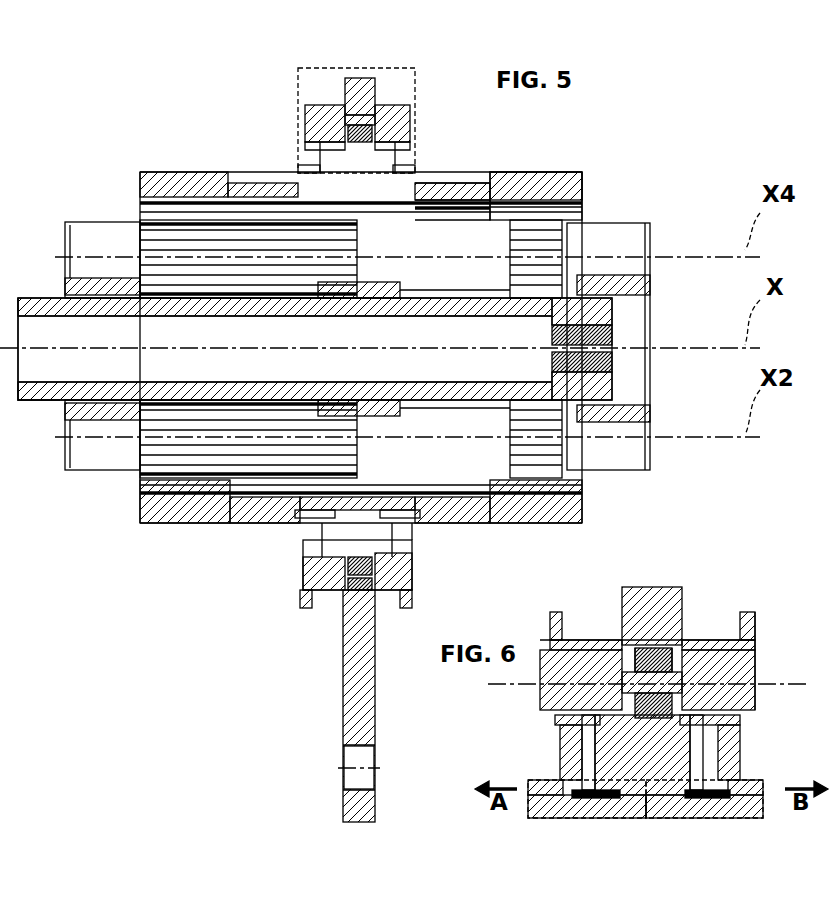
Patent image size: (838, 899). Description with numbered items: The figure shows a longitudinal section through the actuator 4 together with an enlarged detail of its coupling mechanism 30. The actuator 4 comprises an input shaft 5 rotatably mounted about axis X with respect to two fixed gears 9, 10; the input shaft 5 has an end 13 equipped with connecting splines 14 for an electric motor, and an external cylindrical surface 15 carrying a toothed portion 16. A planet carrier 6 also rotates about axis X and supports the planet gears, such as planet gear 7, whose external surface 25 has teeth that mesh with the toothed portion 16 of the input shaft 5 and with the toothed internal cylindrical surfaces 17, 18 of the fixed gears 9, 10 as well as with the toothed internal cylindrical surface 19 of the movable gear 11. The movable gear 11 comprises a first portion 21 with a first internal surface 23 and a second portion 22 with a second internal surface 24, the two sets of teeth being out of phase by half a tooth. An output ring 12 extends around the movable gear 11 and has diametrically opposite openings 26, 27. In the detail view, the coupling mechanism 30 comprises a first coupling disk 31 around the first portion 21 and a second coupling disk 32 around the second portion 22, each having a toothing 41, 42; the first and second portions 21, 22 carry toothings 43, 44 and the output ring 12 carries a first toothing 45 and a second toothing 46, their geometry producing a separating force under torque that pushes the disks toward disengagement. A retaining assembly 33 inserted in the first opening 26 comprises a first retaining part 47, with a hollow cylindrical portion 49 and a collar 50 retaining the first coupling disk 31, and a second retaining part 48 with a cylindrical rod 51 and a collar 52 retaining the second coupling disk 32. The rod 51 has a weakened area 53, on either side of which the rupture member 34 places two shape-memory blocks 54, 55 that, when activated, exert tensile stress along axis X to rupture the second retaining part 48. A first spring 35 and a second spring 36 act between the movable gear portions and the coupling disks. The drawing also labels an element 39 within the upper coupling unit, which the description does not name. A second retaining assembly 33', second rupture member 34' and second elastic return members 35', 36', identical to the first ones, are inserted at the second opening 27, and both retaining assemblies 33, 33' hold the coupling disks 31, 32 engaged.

In FIG. 5, the actuator 4 is at (194, 120).
In FIG. 5, the input shaft 5 is at (44, 300).
In FIG. 5, the planet carrier 6 is at (100, 286).
In FIG. 5, the planet gear 7 is at (208, 196).
In FIG. 5, the fixed gear 9 is at (176, 188).
In FIG. 5, the fixed gear 10 is at (540, 186).
In FIG. 5, the movable gear 11 is at (455, 184).
In FIG. 5, the output ring 12 is at (358, 86).
In FIG. 6, the output ring 12 is at (640, 596).
In FIG. 5, the end 13 is at (598, 318).
In FIG. 5, the connecting splines 14 is at (598, 364).
In FIG. 5, the external cylindrical surface 15 is at (40, 402).
In FIG. 5, the toothed portion 16 is at (380, 284).
In FIG. 5, the toothed internal cylindrical surface 17 is at (165, 215).
In FIG. 5, the toothed internal cylindrical surface 18 is at (560, 216).
In FIG. 5, the toothed internal cylindrical surface 19 is at (480, 216).
In FIG. 5, the first portion 21 is at (258, 190).
In FIG. 6, the first portion 21 is at (552, 806).
In FIG. 5, the second portion 22 is at (470, 216).
In FIG. 6, the second portion 22 is at (750, 806).
In FIG. 5, the first internal surface 23 is at (222, 200).
In FIG. 5, the second internal surface 24 is at (418, 216).
In FIG. 5, the external surface 25 is at (172, 478).
In FIG. 5, the first opening 26 is at (345, 116).
In FIG. 5, the second opening 27 is at (370, 582).
In FIG. 5, the coupling mechanism 30 is at (336, 62).
In FIG. 6, the coupling mechanism 30 is at (530, 600).
In FIG. 5, the first coupling disk 31 is at (305, 176).
In FIG. 6, the first coupling disk 31 is at (545, 780).
In FIG. 5, the second coupling disk 32 is at (415, 522).
In FIG. 6, the second coupling disk 32 is at (752, 780).
In FIG. 6, the retaining assembly 33 is at (787, 641).
In FIG. 5, the second retaining assembly 33' is at (394, 564).
In FIG. 6, the rupture member 34 is at (720, 690).
In FIG. 5, the second rupture member 34' is at (311, 586).
In FIG. 6, the first spring 35 is at (596, 823).
In FIG. 5, the second elastic return member 35' is at (343, 479).
In FIG. 6, the second spring 36 is at (707, 823).
In FIG. 5, the second elastic return member 36' is at (414, 479).
In FIG. 5, the roller bearing 39 is at (372, 112).
In FIG. 6, the toothing 41 is at (600, 770).
In FIG. 6, the toothing 42 is at (700, 770).
In FIG. 6, the toothing 43 is at (582, 776).
In FIG. 6, the toothing 44 is at (735, 762).
In FIG. 6, the first toothing 45 is at (582, 745).
In FIG. 6, the second toothing 46 is at (750, 722).
In FIG. 6, the first retaining part 47 is at (543, 625).
In FIG. 6, the second retaining part 48 is at (760, 655).
In FIG. 6, the hollow cylindrical portion 49 is at (590, 641).
In FIG. 6, the collar 50 is at (556, 614).
In FIG. 6, the cylindrical rod 51 is at (705, 650).
In FIG. 6, the collar 52 is at (748, 613).
In FIG. 6, the weakened area 53 is at (665, 668).
In FIG. 6, the block 54 is at (657, 664).
In FIG. 6, the block 55 is at (660, 712).